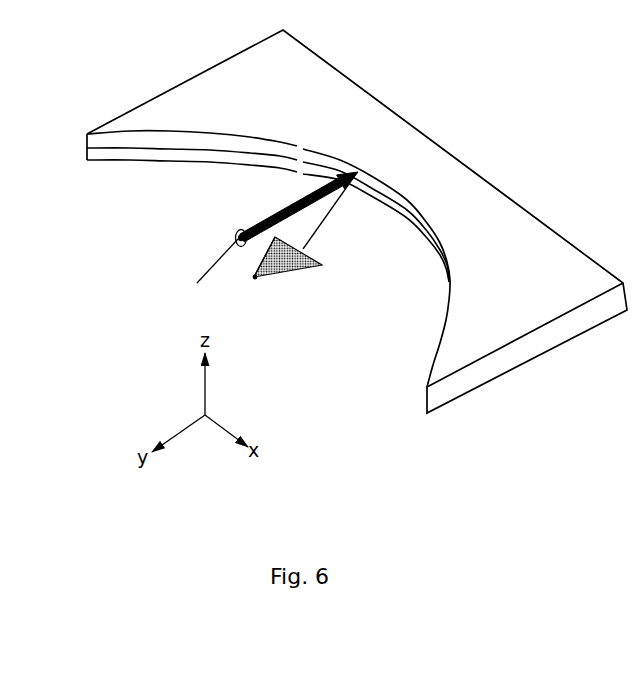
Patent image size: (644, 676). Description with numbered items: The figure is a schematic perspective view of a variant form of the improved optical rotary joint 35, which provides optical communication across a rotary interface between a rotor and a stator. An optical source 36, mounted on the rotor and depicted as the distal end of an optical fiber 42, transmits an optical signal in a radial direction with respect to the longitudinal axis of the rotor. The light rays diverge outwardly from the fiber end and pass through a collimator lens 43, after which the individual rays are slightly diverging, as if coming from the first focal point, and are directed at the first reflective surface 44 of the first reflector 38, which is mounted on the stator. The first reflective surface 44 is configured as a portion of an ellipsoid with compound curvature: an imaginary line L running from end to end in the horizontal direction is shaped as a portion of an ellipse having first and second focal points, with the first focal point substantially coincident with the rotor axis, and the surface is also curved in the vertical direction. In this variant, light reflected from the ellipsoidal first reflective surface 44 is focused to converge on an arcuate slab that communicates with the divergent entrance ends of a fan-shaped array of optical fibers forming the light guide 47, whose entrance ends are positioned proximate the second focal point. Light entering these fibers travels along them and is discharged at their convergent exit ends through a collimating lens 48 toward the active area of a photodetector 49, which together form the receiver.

The optical rotary joint 35 is at (357, 221).
The first reflector 38 is at (210, 102).
The imaginary line L is at (138, 147).
The first reflective surface 44 is at (228, 157).
The collimator lens 43 is at (241, 229).
The optical source 36 is at (219, 249).
The optical fiber 42 is at (207, 266).
The light guide 47 is at (322, 265).
The collimating lens 48 is at (257, 278).
The photodetector 49 is at (250, 281).